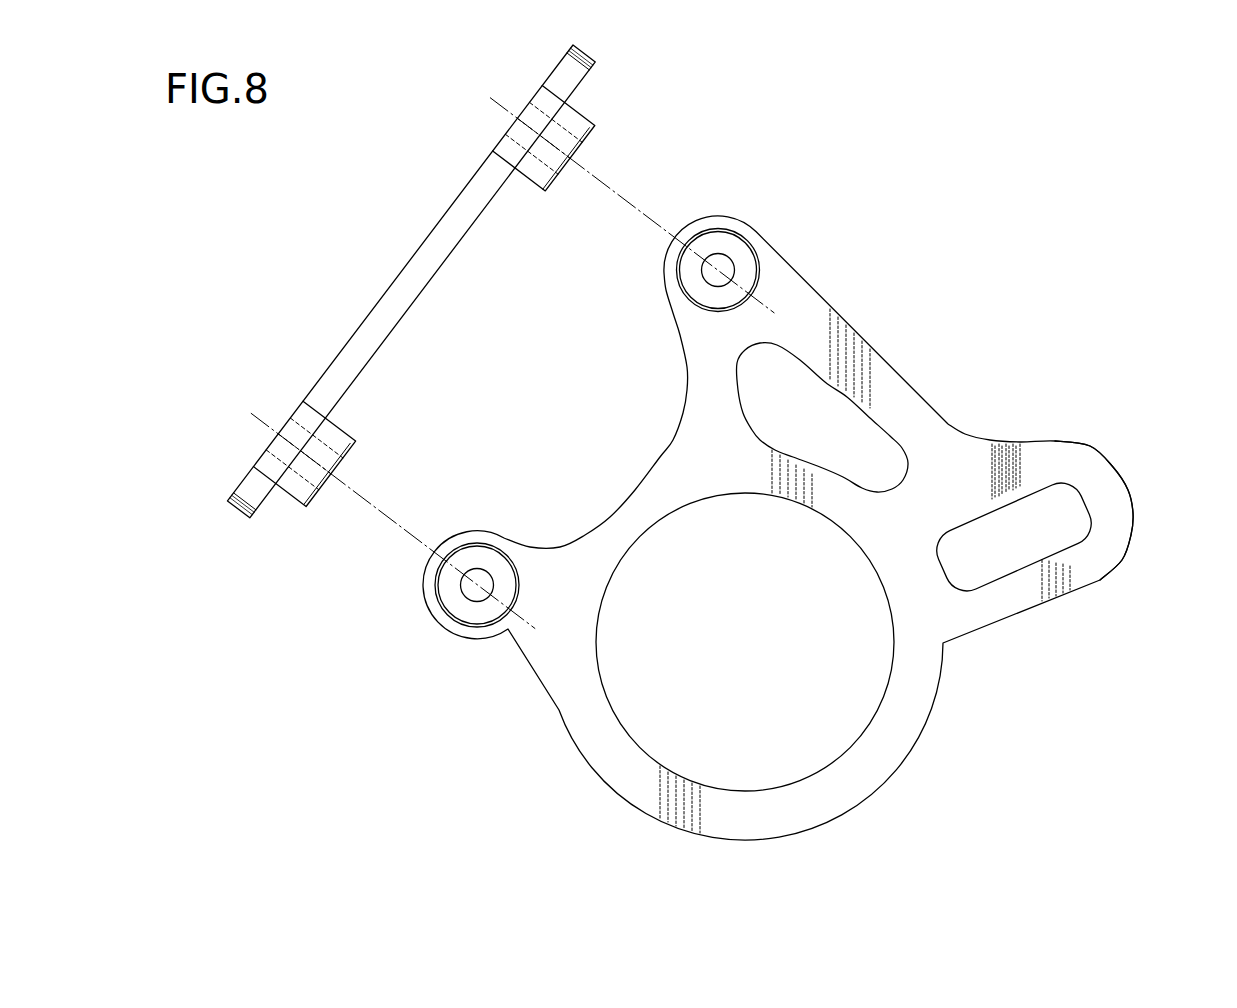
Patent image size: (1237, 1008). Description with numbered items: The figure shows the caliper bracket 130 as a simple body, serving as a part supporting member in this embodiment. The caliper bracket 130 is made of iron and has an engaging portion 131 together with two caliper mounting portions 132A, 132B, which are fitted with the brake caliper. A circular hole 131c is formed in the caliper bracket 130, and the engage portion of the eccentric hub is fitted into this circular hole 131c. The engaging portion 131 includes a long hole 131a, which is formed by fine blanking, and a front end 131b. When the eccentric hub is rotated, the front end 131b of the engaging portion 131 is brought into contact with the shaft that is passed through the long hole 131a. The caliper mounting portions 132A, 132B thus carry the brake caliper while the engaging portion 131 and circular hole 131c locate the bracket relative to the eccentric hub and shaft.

The caliper bracket 130 is at (940, 357).
The engaging portion 131 is at (1097, 582).
The long hole 131a is at (1053, 487).
The front end 131b is at (1093, 503).
The circular hole 131c is at (803, 757).
The caliper mounting portion 132A is at (295, 480).
The caliper mounting portion 132B is at (578, 117).